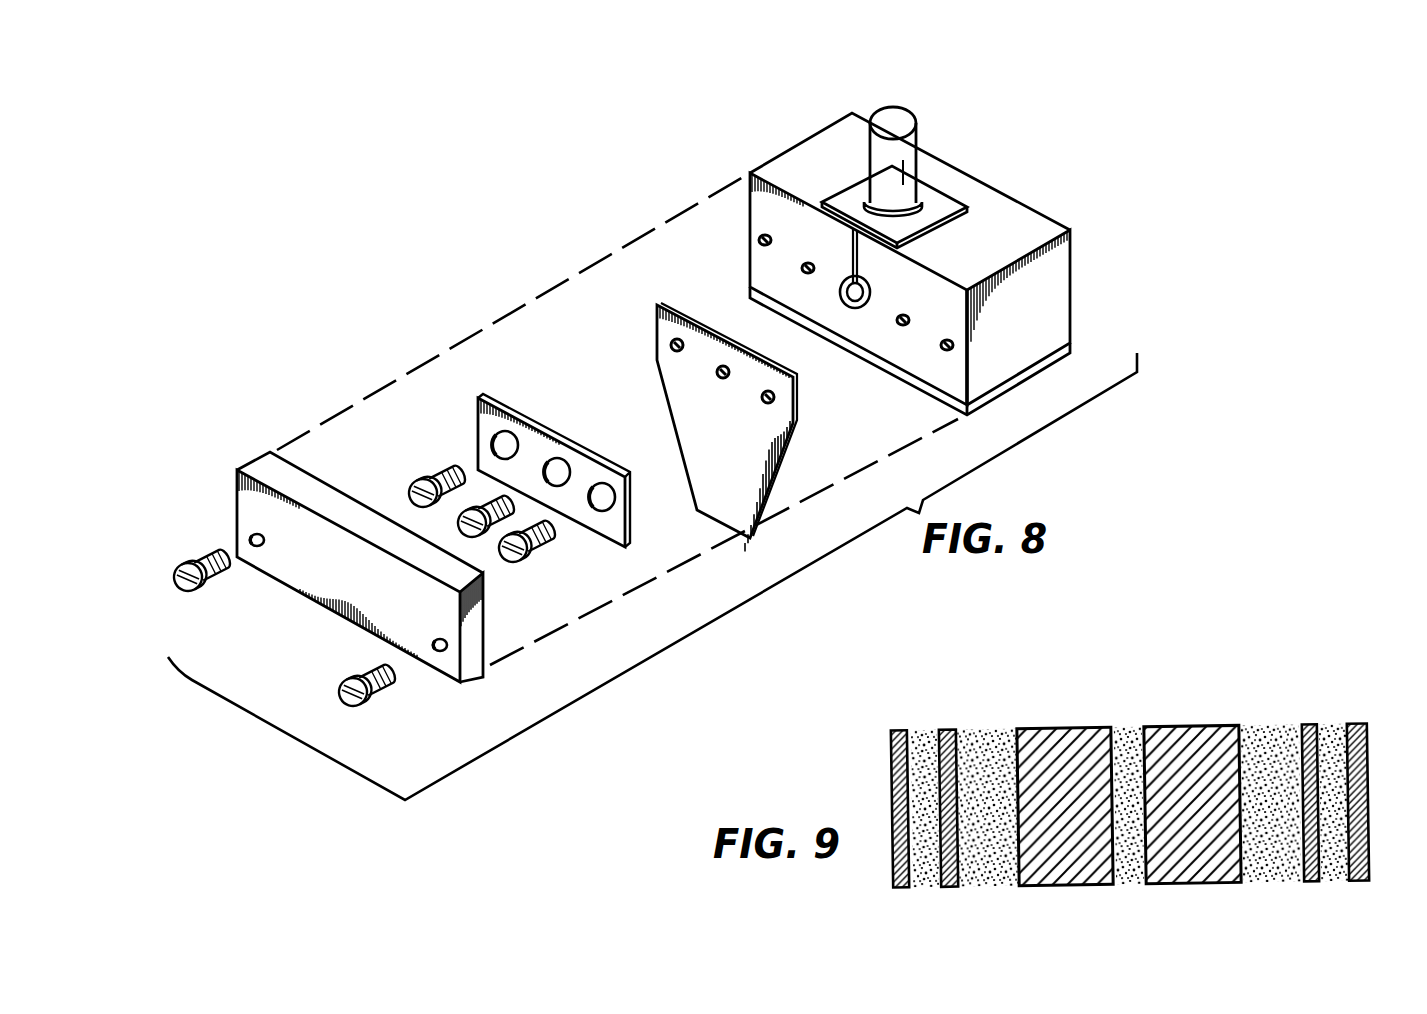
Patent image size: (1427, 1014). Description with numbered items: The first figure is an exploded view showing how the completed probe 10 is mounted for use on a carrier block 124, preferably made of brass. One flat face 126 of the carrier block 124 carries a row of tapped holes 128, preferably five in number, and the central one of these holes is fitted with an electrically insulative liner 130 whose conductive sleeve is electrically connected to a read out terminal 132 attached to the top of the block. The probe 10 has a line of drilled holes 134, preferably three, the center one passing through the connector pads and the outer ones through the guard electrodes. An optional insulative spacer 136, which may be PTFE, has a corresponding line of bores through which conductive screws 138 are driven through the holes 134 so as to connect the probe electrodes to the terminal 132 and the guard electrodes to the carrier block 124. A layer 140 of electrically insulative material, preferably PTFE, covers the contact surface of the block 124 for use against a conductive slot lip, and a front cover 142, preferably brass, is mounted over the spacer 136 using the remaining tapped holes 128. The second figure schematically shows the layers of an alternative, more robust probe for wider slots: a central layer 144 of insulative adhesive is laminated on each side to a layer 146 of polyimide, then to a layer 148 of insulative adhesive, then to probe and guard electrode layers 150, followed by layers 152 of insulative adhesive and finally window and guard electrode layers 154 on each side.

In FIG. 8, the probe 10 is at (685, 437).
In FIG. 8, the carrier block 124 is at (1058, 292).
In FIG. 8, the flat face 126 is at (927, 367).
In FIG. 8, the tapped holes 128 is at (821, 245).
In FIG. 8, the electrically insulative liner 130 is at (853, 310).
In FIG. 8, the read out terminal 132 is at (920, 143).
In FIG. 8, the drilled holes 134 is at (670, 344).
In FIG. 8, the insulative spacer 136 is at (610, 533).
In FIG. 8, the conductive screws 138 is at (473, 505).
In FIG. 8, the layer of electrically insulative material 140 is at (1013, 383).
In FIG. 8, the front cover 142 is at (345, 492).
In FIG. 9, the central layer of insulative adhesive 144 is at (1127, 729).
In FIG. 9, the layer of polyimide material 146 is at (1048, 727).
In FIG. 9, the layer of insulative adhesive 148 is at (987, 733).
In FIG. 9, the probe and guard electrode layers 150 is at (948, 728).
In FIG. 9, the layers of insulative adhesive 152 is at (925, 732).
In FIG. 9, the window and guard electrode layers 154 is at (898, 728).